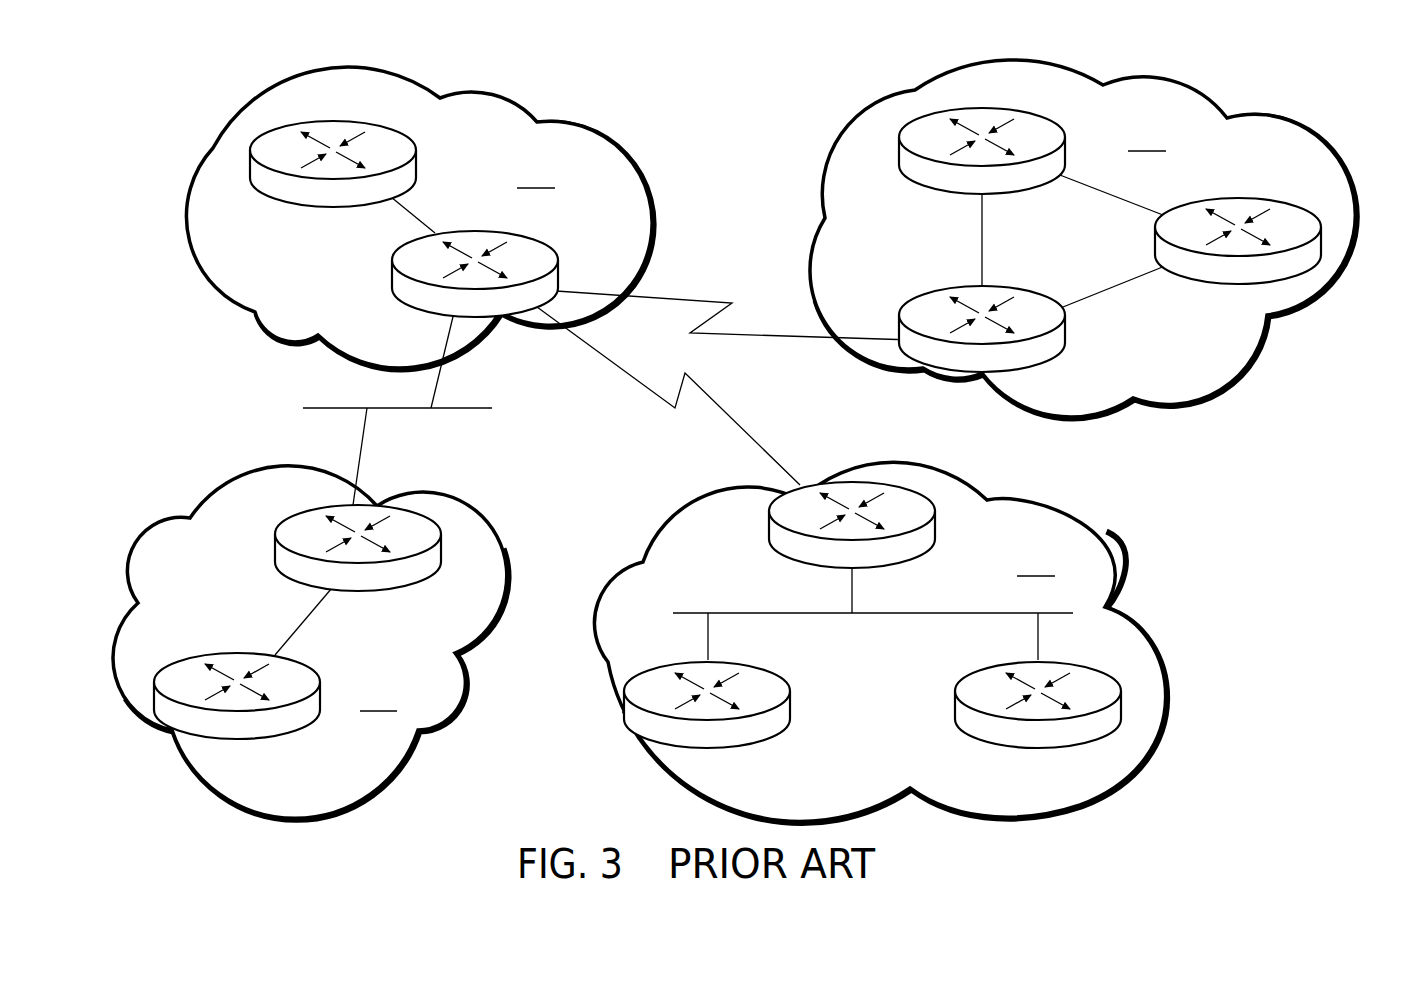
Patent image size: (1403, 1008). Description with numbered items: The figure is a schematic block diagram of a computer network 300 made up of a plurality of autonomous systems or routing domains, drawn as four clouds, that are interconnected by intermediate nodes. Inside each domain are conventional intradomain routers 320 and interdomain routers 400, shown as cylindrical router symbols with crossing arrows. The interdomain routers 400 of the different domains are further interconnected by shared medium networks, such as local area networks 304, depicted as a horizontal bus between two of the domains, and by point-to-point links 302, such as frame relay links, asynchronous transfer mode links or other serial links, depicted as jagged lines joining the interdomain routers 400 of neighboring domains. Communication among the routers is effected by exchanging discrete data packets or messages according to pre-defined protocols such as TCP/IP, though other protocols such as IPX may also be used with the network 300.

The computer network 300 is at (754, 441).
The point-to-point links 302 is at (805, 342).
The local area networks 304 is at (458, 409).
The intradomain routers 320 is at (330, 122).
The interdomain routers 400 is at (542, 247).